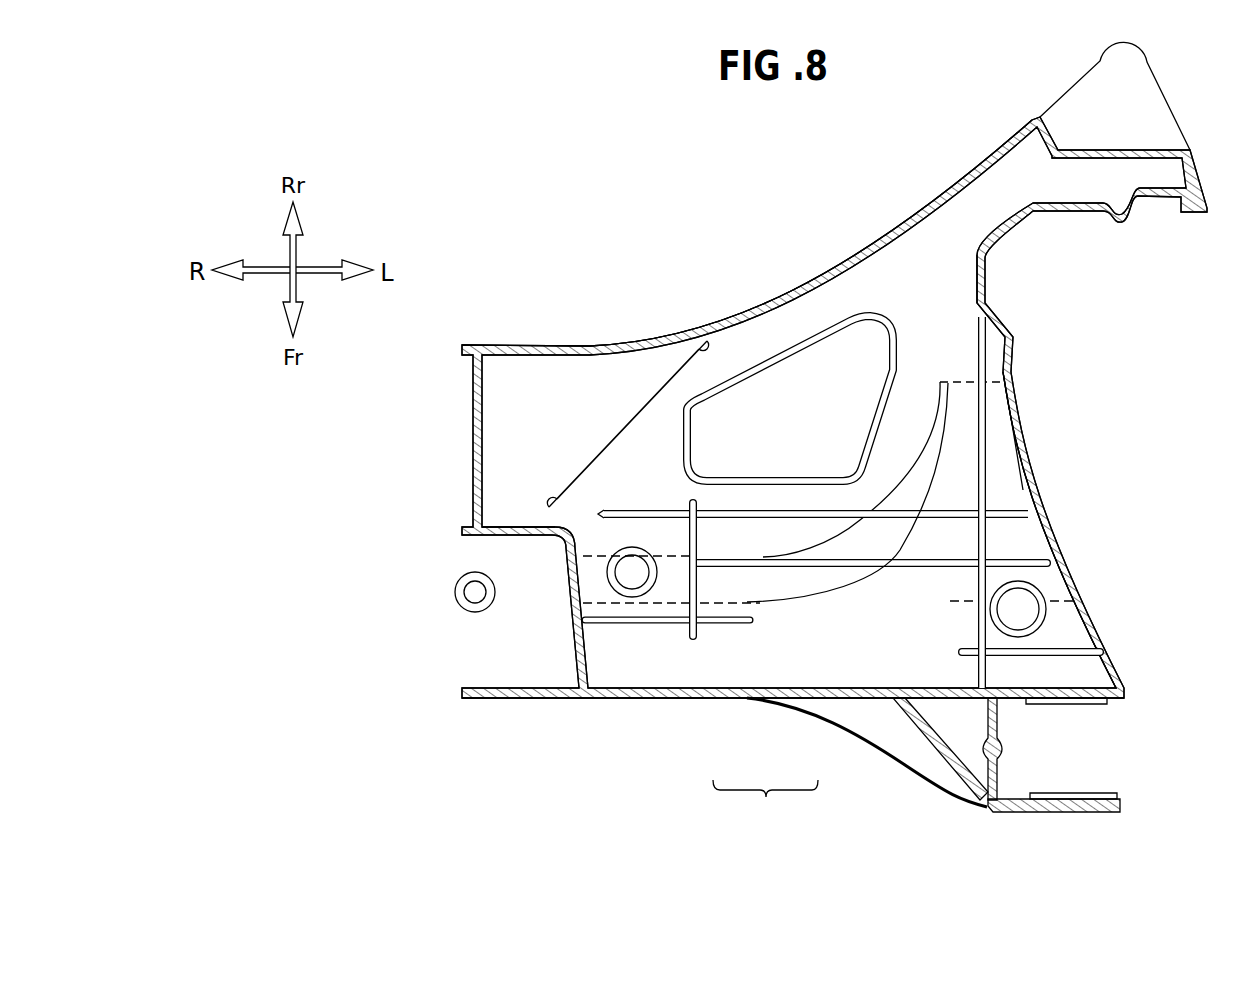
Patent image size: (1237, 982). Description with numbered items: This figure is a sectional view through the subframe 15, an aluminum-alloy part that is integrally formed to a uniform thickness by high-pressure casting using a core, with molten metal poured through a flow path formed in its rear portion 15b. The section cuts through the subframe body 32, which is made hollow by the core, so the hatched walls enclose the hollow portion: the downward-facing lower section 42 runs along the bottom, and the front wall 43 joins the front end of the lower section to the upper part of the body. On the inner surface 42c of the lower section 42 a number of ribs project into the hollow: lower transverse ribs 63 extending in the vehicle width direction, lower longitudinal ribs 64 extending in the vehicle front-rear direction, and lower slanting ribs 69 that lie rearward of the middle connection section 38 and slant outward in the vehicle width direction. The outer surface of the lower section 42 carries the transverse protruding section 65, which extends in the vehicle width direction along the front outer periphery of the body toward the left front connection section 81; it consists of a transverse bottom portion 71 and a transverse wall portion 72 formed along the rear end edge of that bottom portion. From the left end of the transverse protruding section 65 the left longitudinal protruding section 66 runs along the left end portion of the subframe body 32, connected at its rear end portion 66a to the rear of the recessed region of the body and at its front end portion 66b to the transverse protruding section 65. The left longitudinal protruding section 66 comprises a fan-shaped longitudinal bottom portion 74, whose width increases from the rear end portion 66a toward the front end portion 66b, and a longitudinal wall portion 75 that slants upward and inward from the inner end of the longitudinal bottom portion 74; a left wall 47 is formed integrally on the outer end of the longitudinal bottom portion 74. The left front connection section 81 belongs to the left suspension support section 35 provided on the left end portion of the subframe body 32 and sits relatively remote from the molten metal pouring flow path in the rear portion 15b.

The subframe 15 is at (662, 162).
The rear portion of the subframe 15b is at (493, 347).
The subframe body 32 is at (903, 220).
The left suspension support section 35 is at (1085, 813).
The middle connection section 38 is at (510, 527).
The lower section 42 is at (743, 357).
The inner surface of the lower section 42c is at (752, 497).
The front wall 43 is at (662, 698).
The left wall 47 is at (1043, 527).
The lower transverse ribs 63 is at (887, 513).
The lower longitudinal ribs 64 is at (688, 593).
The transverse protruding section 65 is at (765, 805).
The left longitudinal protruding section 66 is at (1114, 360).
The rear end portion of the left longitudinal protruding section 66a is at (960, 390).
The front end portion of the left longitudinal protruding section 66b is at (900, 593).
The lower slanting ribs 69 is at (633, 397).
The transverse bottom portion 71 is at (797, 663).
The transverse wall portion 72 is at (675, 485).
The longitudinal bottom portion 74 is at (997, 490).
The longitudinal wall portion 75 is at (937, 440).
The left front connection section 81 is at (1027, 812).